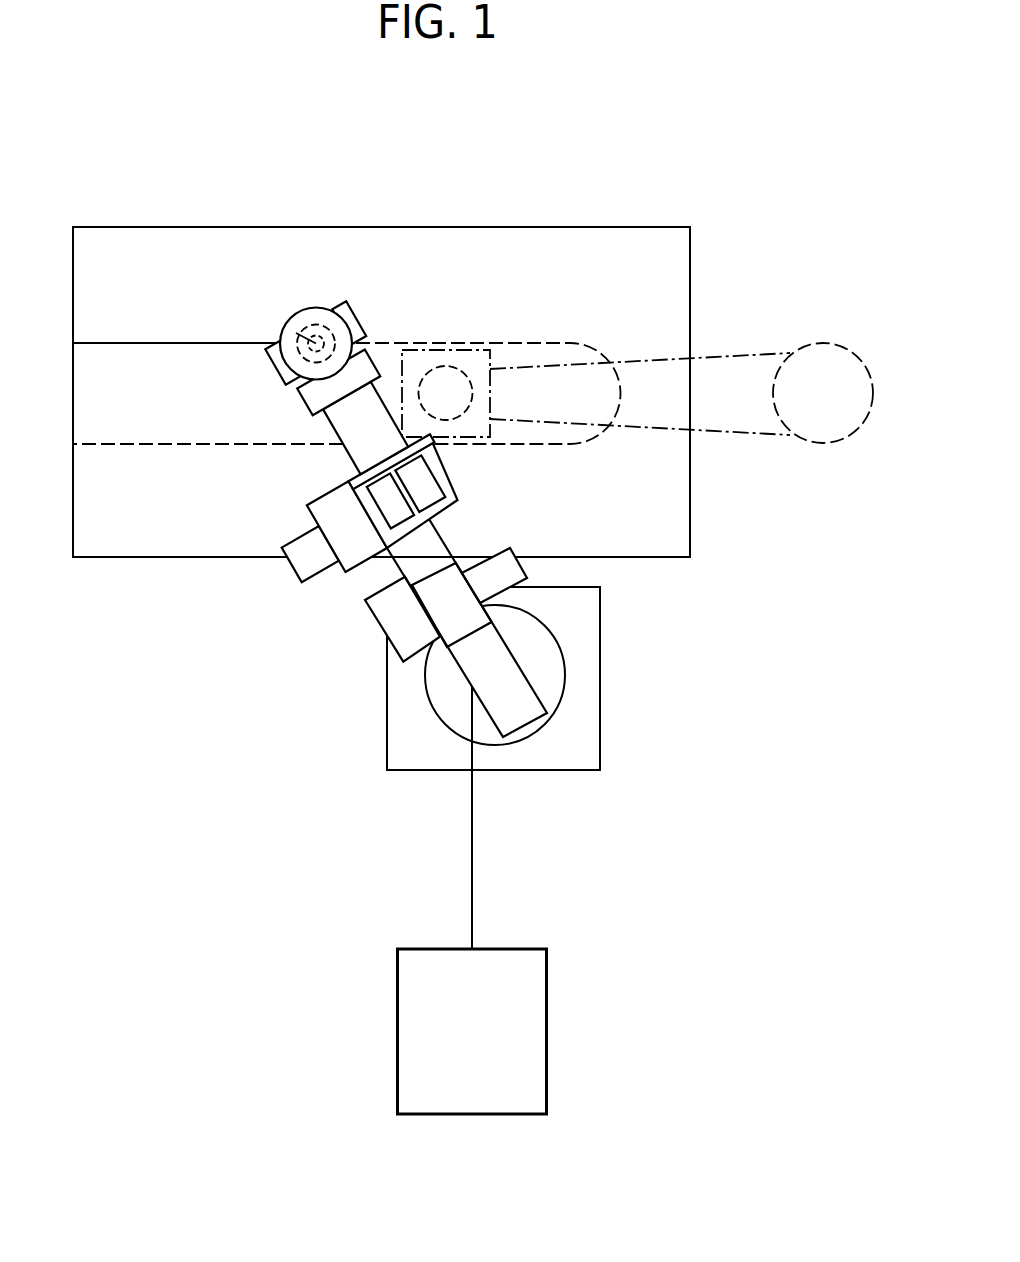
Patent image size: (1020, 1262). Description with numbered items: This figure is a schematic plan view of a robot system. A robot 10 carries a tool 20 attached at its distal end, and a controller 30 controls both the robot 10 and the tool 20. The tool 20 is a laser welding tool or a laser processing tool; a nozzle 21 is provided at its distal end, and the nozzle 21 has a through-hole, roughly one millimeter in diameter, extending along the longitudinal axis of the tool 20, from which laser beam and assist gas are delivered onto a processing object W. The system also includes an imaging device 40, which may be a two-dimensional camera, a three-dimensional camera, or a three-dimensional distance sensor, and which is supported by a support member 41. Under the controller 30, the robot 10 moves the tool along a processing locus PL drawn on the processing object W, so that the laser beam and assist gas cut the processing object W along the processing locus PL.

The processing object W is at (690, 275).
The processing locus PL is at (138, 343).
The robot 10 is at (350, 712).
The tool 20 is at (311, 325).
The nozzle 21 is at (296, 333).
The controller 30 is at (547, 1027).
The imaging device 40 is at (432, 350).
The support member 41 is at (743, 432).